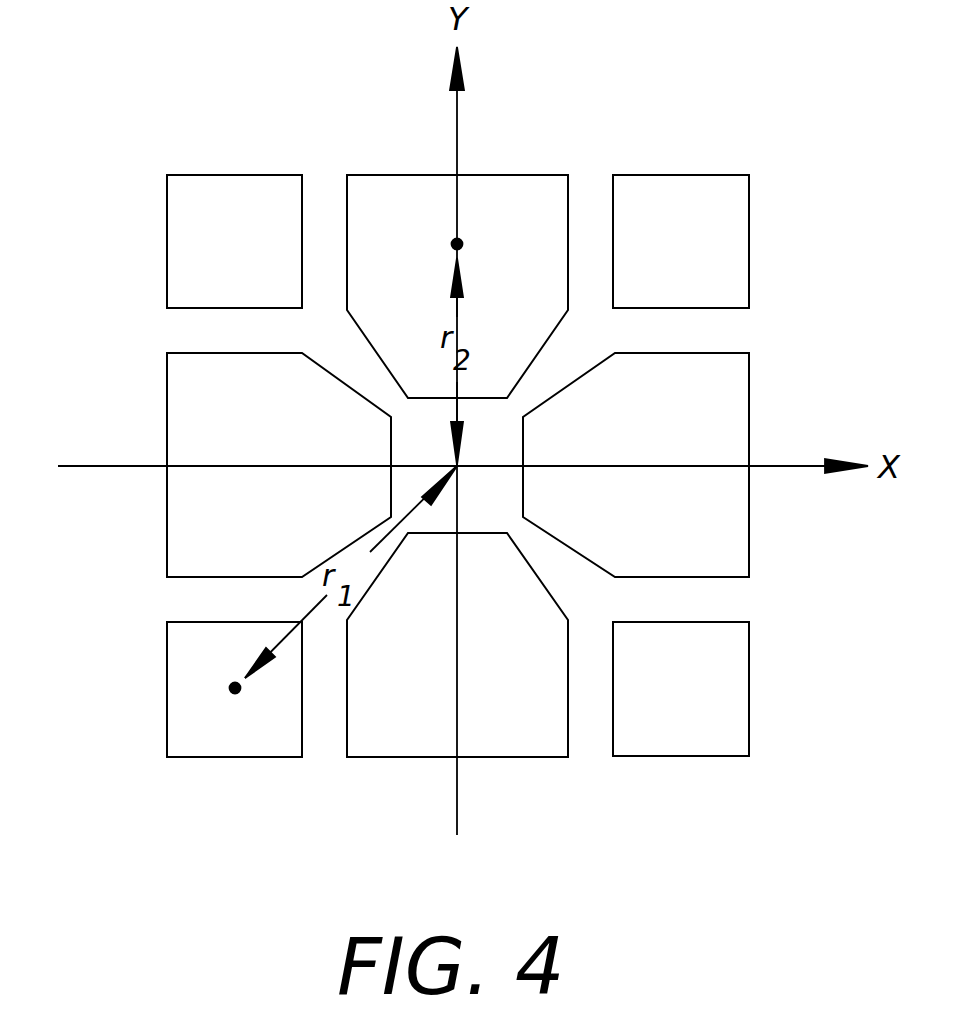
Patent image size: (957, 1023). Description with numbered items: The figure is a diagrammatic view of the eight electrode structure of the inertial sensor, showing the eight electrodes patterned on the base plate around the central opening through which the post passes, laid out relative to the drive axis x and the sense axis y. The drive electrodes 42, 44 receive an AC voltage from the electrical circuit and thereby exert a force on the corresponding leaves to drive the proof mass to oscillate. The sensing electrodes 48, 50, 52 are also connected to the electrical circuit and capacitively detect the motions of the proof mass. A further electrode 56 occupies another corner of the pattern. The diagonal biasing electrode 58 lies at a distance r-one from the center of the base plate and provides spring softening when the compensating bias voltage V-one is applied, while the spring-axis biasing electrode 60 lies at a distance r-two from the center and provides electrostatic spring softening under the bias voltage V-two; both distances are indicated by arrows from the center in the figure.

The drive electrode 42 is at (230, 192).
The drive electrode 44 is at (727, 225).
The sensing electrode 48 is at (190, 408).
The sensing electrode 50 is at (727, 532).
The sensing electrode 52 is at (407, 733).
The electrode 56 is at (727, 695).
The diagonal biasing electrode 58 is at (213, 733).
The spring-axis biasing electrode 60 is at (515, 188).